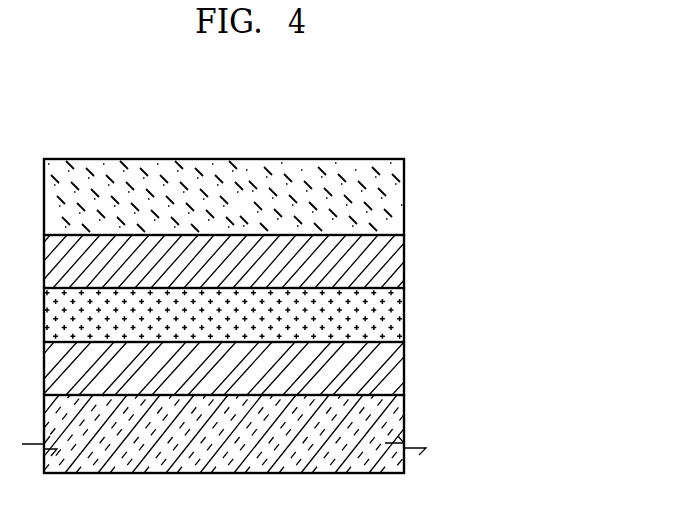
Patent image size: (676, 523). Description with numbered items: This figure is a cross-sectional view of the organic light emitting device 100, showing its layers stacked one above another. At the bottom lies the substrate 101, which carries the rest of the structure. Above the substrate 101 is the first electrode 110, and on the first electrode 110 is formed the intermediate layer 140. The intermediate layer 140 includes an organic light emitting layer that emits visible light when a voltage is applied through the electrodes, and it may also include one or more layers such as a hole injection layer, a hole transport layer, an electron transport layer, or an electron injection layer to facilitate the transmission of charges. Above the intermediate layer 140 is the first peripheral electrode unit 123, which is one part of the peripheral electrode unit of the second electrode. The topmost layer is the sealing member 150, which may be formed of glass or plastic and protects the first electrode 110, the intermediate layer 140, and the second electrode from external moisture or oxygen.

The organic light emitting device 100 is at (520, 200).
The substrate 101 is at (404, 417).
The first electrode 110 is at (404, 363).
The intermediate layer 140 is at (404, 315).
The first peripheral electrode unit 123 is at (404, 262).
The sealing member 150 is at (404, 198).